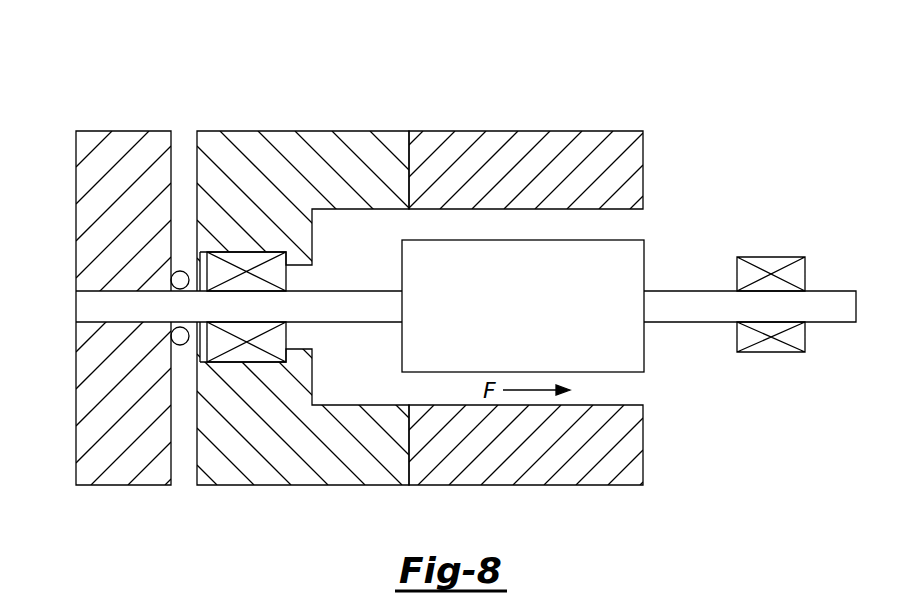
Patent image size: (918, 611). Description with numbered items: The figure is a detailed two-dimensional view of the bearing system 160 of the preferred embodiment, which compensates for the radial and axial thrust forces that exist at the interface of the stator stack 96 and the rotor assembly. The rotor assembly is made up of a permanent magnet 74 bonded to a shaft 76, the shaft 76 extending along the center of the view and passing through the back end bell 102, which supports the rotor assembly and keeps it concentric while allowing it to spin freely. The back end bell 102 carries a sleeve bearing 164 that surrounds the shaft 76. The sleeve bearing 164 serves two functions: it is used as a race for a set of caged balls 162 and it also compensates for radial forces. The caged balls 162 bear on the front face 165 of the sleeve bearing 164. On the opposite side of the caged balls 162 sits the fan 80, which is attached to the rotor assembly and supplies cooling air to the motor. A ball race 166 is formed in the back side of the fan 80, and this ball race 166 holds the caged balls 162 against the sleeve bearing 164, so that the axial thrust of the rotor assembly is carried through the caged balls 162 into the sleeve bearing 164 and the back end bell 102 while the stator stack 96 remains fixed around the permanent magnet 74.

The fan 80 is at (132, 130).
The bearing system 160 is at (175, 124).
The back end bell 102 is at (317, 130).
The stator stack 96 is at (560, 129).
The permanent magnet 74 is at (645, 255).
The shaft 76 is at (830, 285).
The caged balls 162 is at (165, 328).
The sleeve bearing 164 is at (287, 278).
The ball race 166 is at (171, 280).
The front face 165 is at (210, 340).